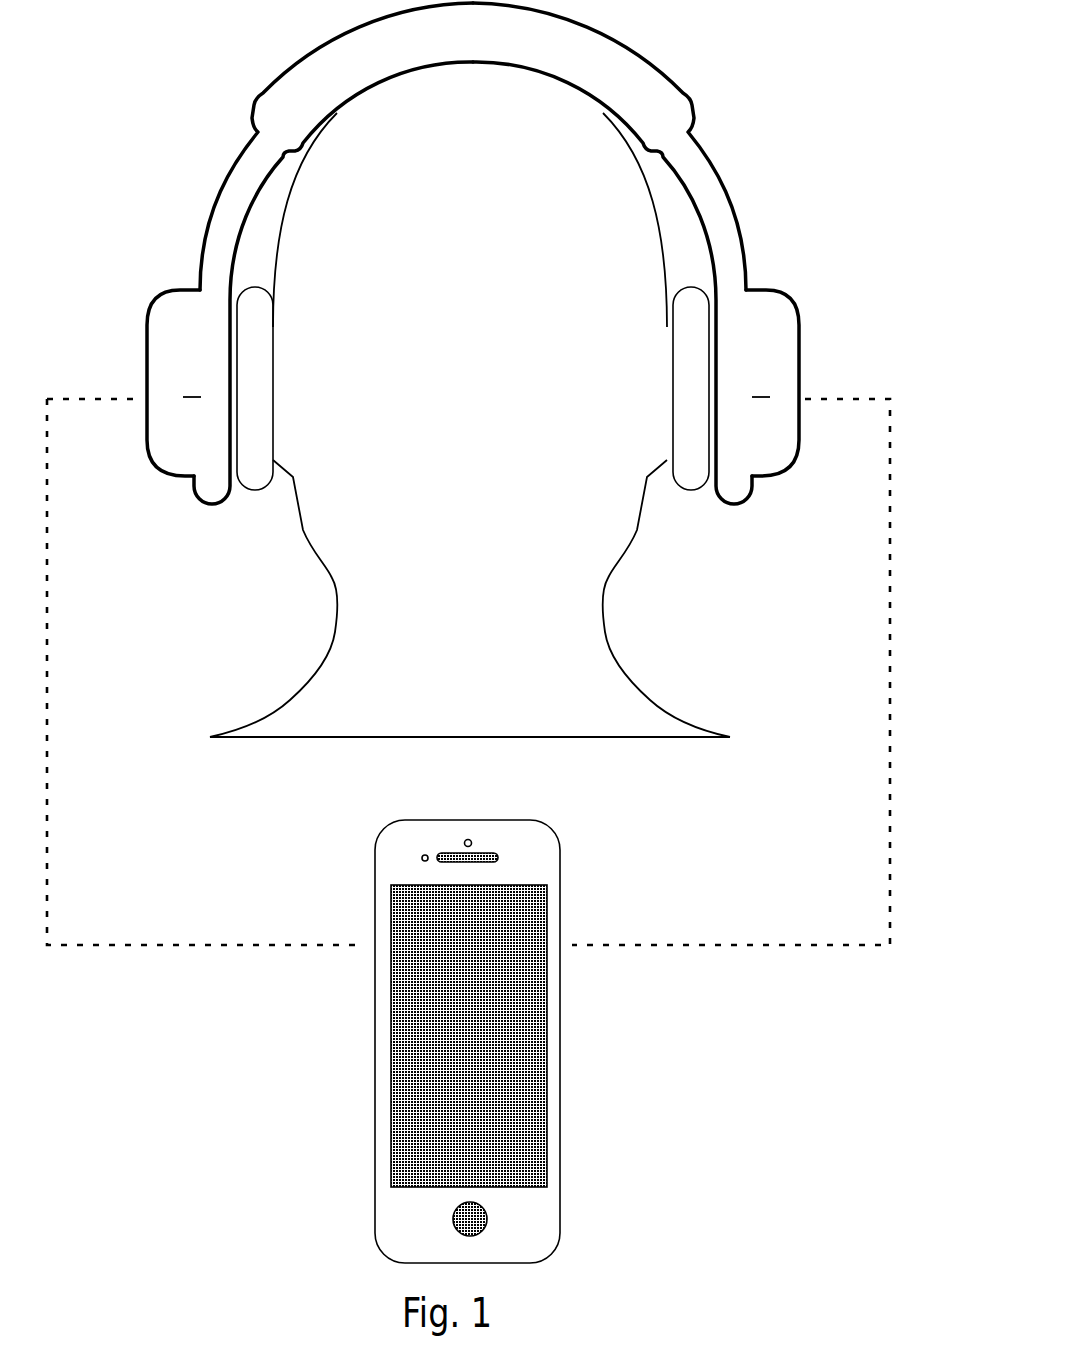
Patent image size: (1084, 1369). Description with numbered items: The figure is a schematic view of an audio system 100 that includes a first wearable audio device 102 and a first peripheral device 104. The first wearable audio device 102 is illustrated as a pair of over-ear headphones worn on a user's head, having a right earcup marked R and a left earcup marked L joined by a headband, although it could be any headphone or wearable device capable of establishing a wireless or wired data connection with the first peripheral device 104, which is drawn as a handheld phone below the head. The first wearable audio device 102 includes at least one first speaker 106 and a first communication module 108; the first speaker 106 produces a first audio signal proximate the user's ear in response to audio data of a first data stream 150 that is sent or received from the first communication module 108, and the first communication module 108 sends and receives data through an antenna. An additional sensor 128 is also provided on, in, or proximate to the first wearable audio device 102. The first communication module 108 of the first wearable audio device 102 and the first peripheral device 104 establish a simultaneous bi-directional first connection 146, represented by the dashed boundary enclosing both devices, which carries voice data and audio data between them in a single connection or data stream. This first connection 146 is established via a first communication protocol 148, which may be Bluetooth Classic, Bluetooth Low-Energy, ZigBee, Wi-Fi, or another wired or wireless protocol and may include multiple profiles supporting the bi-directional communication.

The audio system 100 is at (740, 128).
The first wearable audio device 102 is at (187, 288).
The first peripheral device 104 is at (560, 862).
The first speaker 106 is at (715, 367).
The first communication module 108 is at (800, 368).
The additional sensor 128 is at (736, 388).
The first connection 146 is at (80, 945).
The first communication protocol 148 is at (468, 672).
The first data stream 150 is at (468, 672).